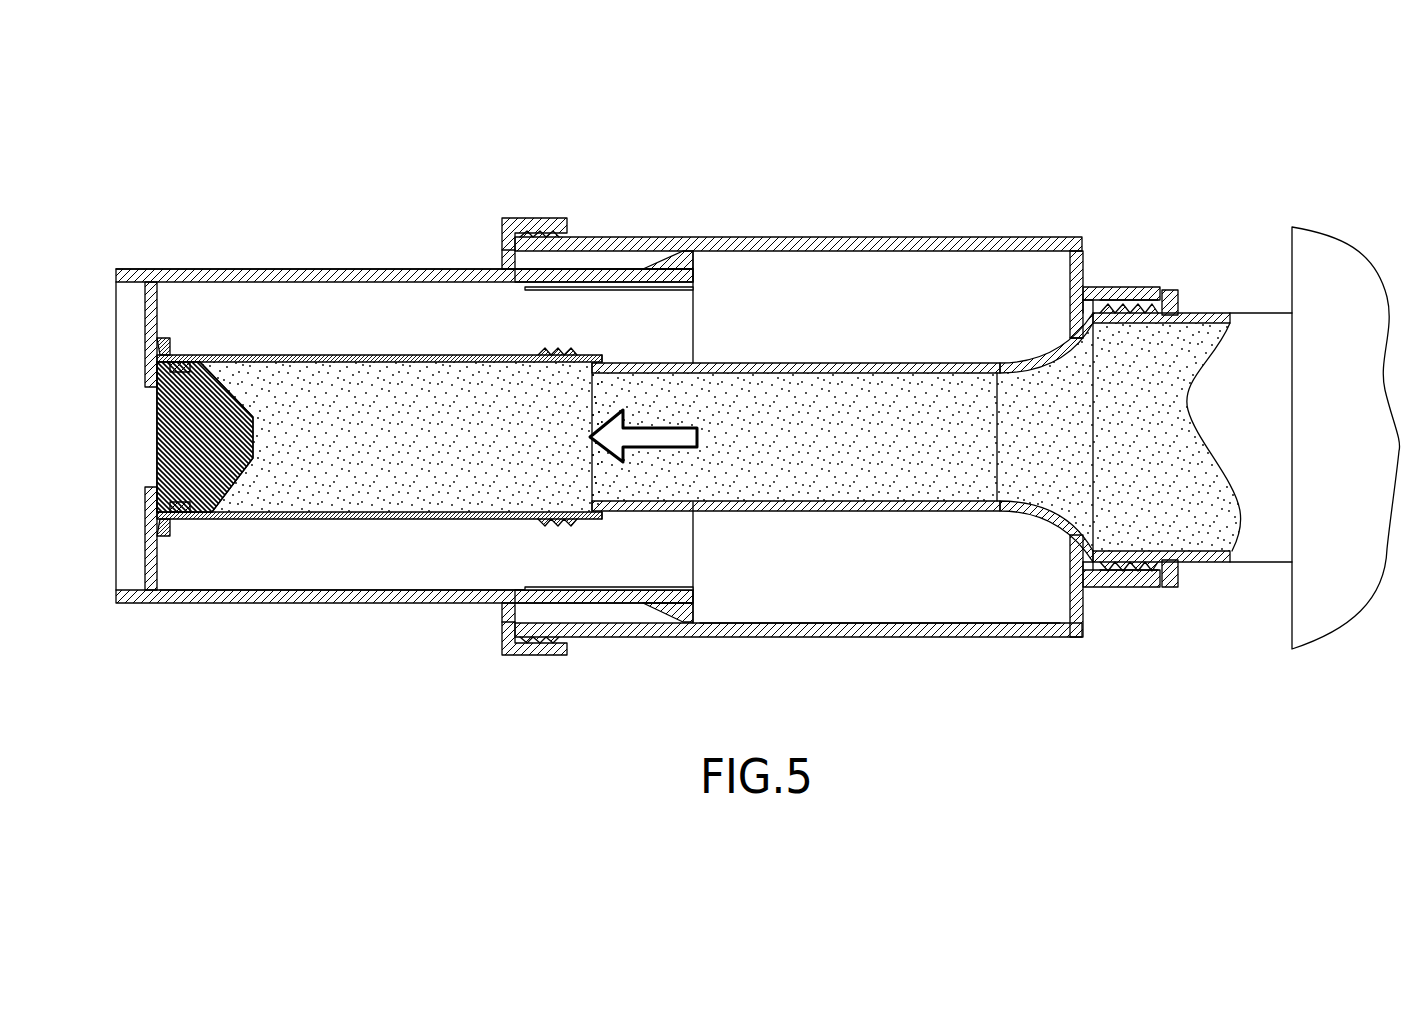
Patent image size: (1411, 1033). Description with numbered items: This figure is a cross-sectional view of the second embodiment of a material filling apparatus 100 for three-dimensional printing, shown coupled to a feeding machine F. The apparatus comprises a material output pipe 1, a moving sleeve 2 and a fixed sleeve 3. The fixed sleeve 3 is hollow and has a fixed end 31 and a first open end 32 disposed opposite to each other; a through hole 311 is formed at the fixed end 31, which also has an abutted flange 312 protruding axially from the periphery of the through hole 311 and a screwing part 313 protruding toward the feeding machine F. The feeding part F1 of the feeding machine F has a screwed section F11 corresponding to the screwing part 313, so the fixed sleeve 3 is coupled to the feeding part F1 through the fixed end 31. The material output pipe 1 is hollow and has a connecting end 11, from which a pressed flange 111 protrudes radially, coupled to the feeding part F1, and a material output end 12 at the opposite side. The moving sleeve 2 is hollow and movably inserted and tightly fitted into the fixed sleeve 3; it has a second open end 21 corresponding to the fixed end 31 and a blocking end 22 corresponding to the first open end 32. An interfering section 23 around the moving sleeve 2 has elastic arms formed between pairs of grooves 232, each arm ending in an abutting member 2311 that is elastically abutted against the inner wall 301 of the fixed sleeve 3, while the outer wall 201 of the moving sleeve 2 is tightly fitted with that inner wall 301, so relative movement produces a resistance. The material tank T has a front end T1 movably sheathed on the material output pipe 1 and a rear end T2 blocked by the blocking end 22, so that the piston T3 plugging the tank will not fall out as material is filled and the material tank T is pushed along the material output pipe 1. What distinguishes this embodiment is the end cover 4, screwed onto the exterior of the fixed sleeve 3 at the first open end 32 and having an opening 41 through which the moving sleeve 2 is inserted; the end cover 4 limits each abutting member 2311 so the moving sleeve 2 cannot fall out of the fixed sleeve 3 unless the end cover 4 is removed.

The material filling apparatus 100 is at (873, 184).
The material output pipe 1 is at (848, 512).
The connecting end 11 is at (1128, 568).
The pressed flange 111 is at (1085, 300).
The material output end 12 is at (592, 400).
The moving sleeve 2 is at (403, 606).
The outer wall 201 is at (270, 604).
The second open end 21 is at (694, 305).
The blocking end 22 is at (145, 320).
The interfering section 23 is at (660, 622).
The abutting member 2311 is at (675, 259).
The groove 232 is at (618, 287).
The fixed sleeve 3 is at (808, 640).
The inner wall 301 is at (916, 623).
The fixed end 31 is at (1085, 613).
The through hole 311 is at (1072, 337).
The abutted flange 312 is at (1083, 306).
The screwing part 313 is at (1135, 289).
The first open end 32 is at (500, 613).
The end cover 4 is at (540, 659).
The opening 41 is at (492, 293).
The material tank T is at (381, 523).
The front end T1 is at (603, 516).
The rear end T2 is at (157, 528).
The piston T3 is at (245, 395).
The feeding machine F is at (1288, 617).
The feeding part F1 is at (1200, 563).
The screwed section F11 is at (1143, 323).